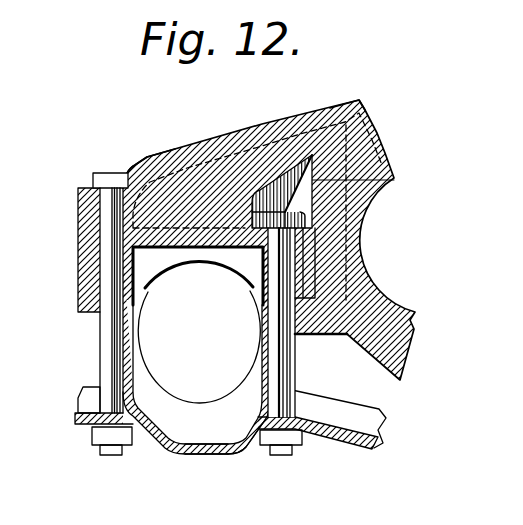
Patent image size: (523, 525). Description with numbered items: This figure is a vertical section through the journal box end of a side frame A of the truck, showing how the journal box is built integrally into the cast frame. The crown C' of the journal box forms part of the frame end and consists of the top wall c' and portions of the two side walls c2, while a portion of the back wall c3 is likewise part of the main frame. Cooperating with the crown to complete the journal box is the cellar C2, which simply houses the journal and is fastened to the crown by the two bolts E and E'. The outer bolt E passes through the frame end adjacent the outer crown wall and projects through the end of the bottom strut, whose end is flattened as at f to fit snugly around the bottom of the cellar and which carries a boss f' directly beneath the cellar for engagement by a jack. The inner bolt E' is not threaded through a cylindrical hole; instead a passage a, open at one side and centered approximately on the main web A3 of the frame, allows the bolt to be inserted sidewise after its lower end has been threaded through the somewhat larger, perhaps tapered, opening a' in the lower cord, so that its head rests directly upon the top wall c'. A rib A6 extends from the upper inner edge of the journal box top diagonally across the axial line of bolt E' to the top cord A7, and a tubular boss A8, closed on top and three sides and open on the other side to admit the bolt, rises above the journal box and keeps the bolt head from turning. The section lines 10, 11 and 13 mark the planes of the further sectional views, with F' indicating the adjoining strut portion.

The side frame A is at (379, 130).
The main web A3 is at (200, 173).
The rib A6 is at (369, 84).
The top cord A7 is at (203, 133).
The tubular boss A8 is at (395, 181).
The crown of journal box C' is at (64, 250).
The side walls c2 is at (126, 275).
The top wall c' is at (199, 272).
The back wall c3 is at (157, 267).
The passage a is at (265, 268).
The opening a' is at (321, 343).
The bolt E is at (83, 314).
The bolt E' is at (299, 305).
The cellar C2 is at (160, 447).
The boss f' is at (205, 474).
The flattened end portion of strut f is at (246, 462).
The flange F' is at (322, 448).
The section line 10- 10 is at (23, 238).
The section line 11- 11 is at (65, 198).
The section line 13- 13 is at (300, 97).